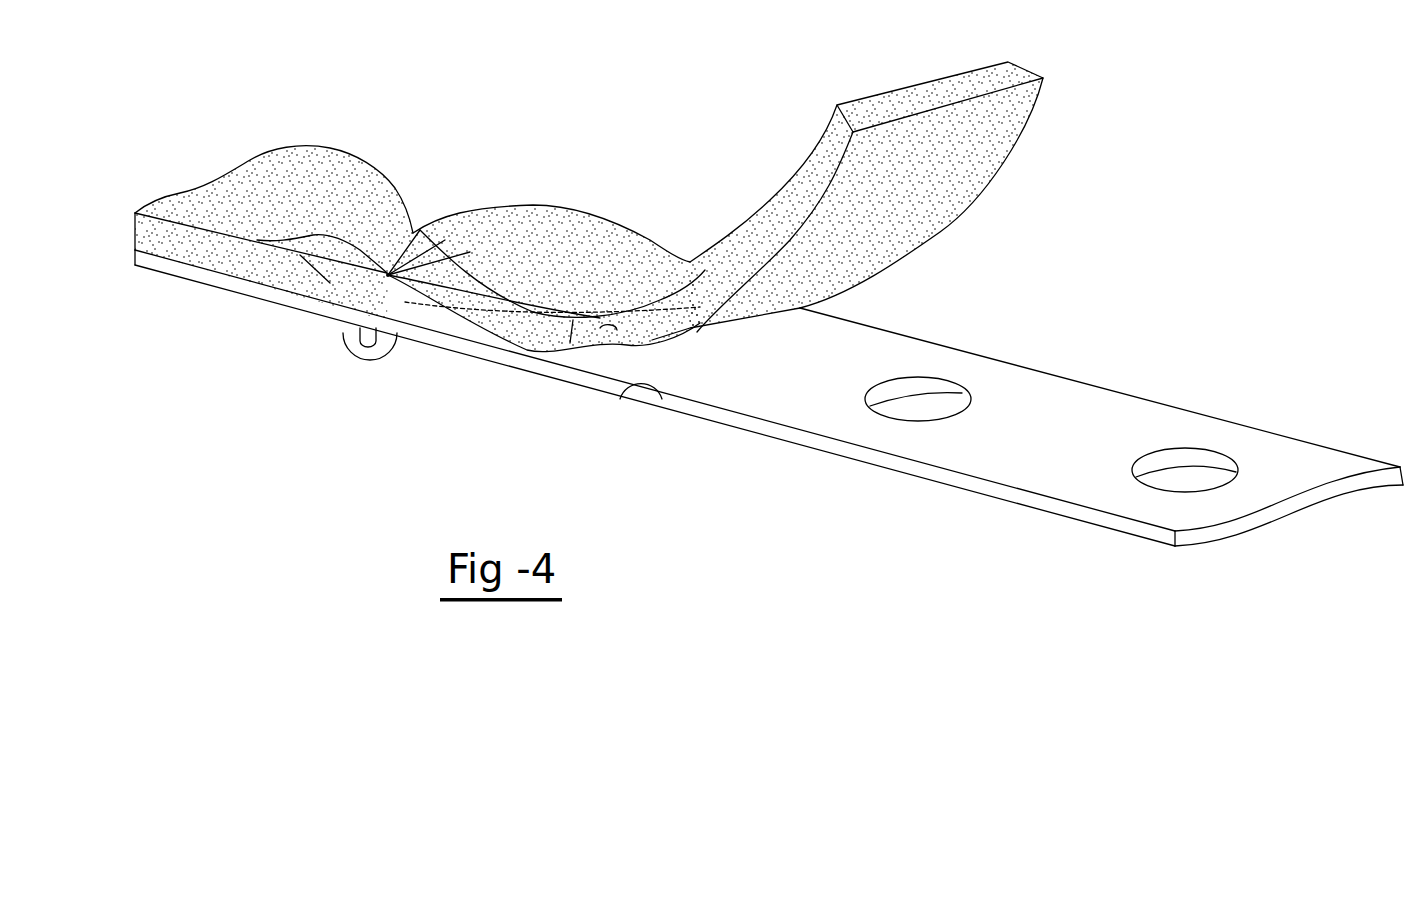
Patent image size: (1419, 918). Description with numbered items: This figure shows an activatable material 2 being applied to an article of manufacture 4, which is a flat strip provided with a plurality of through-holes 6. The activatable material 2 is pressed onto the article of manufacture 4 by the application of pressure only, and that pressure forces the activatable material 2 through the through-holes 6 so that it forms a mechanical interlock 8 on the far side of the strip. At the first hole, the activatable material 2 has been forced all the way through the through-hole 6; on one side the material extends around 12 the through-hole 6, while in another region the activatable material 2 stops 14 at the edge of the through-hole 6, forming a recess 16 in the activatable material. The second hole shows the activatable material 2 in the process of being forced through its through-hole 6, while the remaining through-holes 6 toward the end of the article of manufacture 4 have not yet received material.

The activatable material 2 is at (538, 230).
The article of manufacture 4 is at (545, 370).
The through-holes 6 is at (388, 272).
The mechanical interlock 8 is at (352, 334).
The region where the activatable material extends around the through-hole 12 is at (417, 232).
The region where the activatable material stops at the through-hole 14 is at (330, 283).
The recess 16 is at (393, 284).